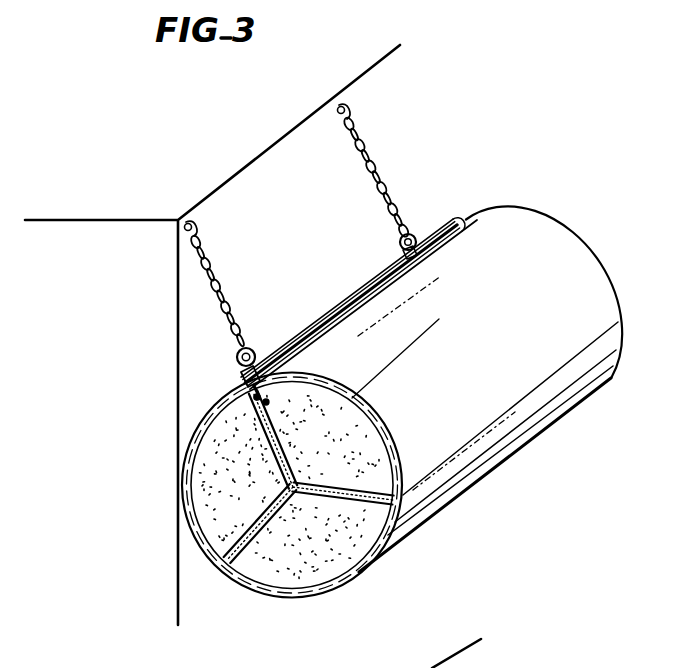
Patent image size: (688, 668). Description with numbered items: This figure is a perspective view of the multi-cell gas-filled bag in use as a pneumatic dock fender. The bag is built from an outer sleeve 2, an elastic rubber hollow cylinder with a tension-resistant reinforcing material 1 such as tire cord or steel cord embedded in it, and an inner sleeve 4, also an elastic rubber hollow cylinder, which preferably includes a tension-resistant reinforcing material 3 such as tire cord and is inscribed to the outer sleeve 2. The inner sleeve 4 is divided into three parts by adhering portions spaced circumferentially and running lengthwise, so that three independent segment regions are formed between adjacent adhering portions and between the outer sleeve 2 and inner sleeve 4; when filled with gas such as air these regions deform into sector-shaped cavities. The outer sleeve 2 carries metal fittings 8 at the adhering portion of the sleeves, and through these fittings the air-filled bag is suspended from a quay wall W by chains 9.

The quay wall W is at (240, 190).
The tension-resistant reinforcing material 1 is at (366, 572).
The outer sleeve 2 is at (338, 588).
The tension-resistant reinforcing material 3 is at (277, 517).
The inner sleeve 4 is at (259, 537).
The metal fittings 8 is at (256, 347).
The chains 9 is at (396, 198).